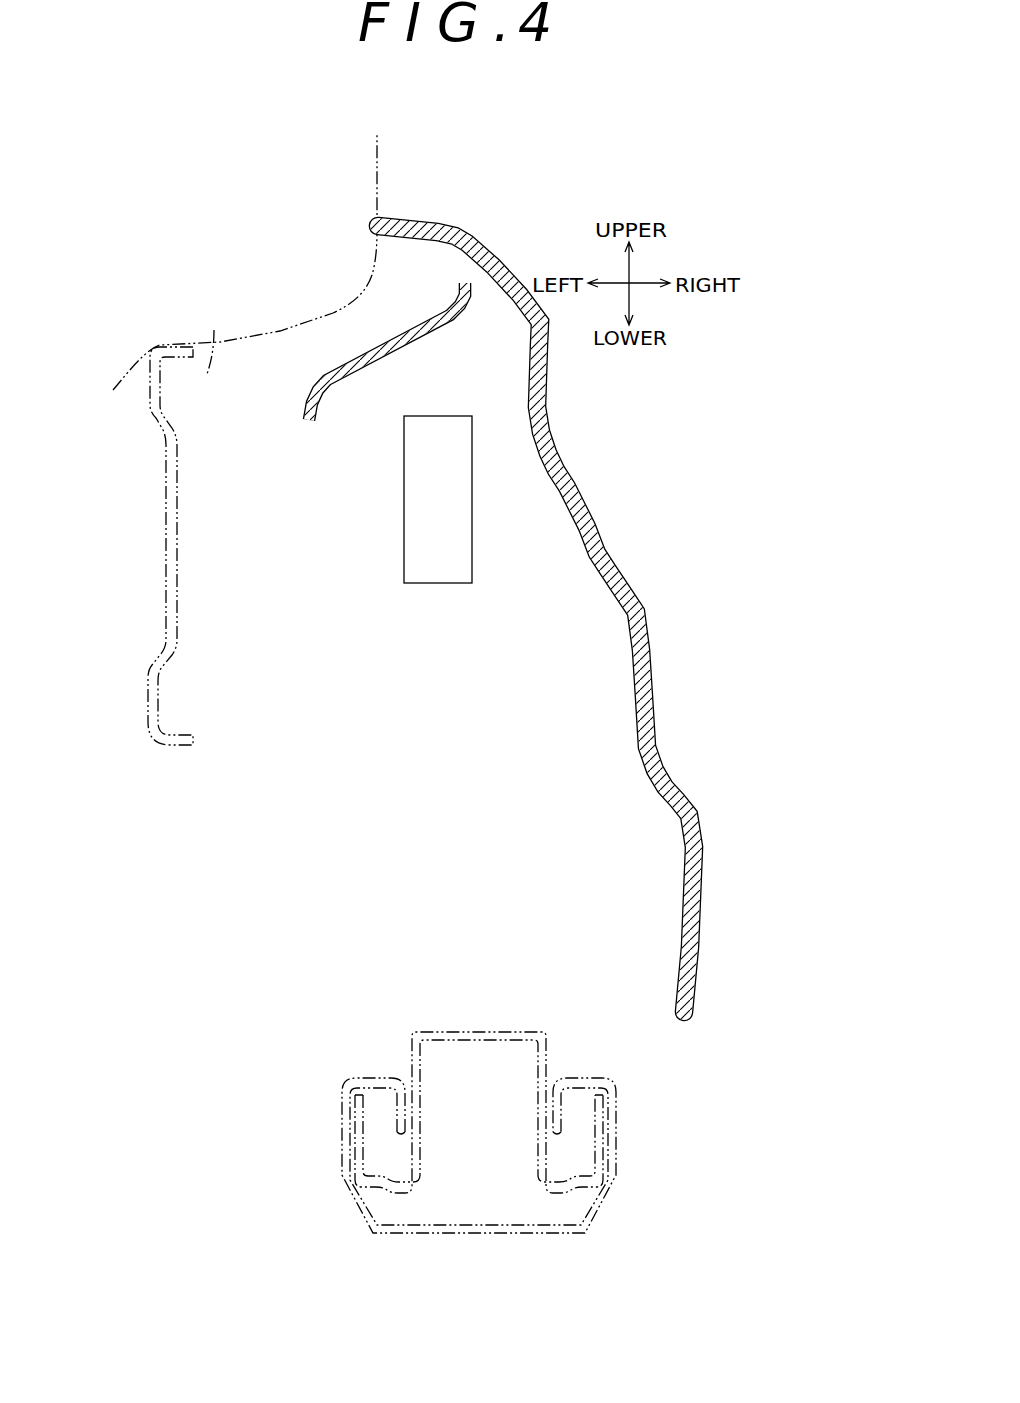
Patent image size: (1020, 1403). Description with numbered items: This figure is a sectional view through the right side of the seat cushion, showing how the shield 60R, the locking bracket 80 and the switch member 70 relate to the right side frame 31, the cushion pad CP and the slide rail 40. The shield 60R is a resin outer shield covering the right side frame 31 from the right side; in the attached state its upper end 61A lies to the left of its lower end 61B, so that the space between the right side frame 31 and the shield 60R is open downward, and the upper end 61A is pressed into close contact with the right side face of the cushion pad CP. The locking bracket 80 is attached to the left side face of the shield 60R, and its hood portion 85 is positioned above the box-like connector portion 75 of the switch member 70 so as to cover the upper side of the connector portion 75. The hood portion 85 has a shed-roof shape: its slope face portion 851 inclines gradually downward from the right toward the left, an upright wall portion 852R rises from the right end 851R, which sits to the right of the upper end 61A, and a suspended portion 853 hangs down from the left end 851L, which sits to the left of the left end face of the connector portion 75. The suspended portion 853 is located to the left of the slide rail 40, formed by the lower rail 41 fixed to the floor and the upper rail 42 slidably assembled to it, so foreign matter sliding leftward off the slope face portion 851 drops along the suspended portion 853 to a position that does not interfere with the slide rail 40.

The shield 60R is at (649, 681).
The upper end of the shield 61A is at (381, 230).
The lower end of the shield 61B is at (688, 1020).
The hood portion 85 is at (390, 342).
The slope face portion 851 is at (391, 346).
The left end of the slope face portion 851L is at (322, 374).
The right end of the slope face portion 851R is at (443, 308).
The upright wall portion 852R is at (467, 283).
The suspended portion 853 is at (305, 410).
The locking bracket 80 is at (418, 354).
The connector portion 75 is at (433, 563).
The switch member 70 is at (459, 546).
The side frame 31 is at (173, 540).
The cushion pad CP is at (207, 372).
The slide rail 40 is at (435, 1090).
The lower rail 41 is at (358, 1080).
The upper rail 42 is at (364, 1026).